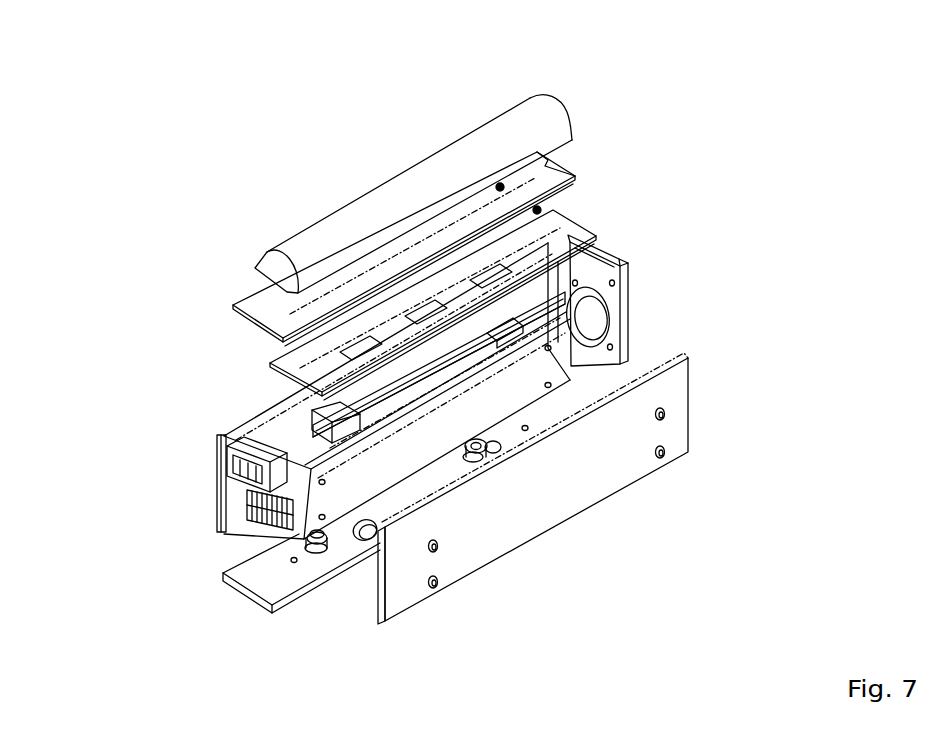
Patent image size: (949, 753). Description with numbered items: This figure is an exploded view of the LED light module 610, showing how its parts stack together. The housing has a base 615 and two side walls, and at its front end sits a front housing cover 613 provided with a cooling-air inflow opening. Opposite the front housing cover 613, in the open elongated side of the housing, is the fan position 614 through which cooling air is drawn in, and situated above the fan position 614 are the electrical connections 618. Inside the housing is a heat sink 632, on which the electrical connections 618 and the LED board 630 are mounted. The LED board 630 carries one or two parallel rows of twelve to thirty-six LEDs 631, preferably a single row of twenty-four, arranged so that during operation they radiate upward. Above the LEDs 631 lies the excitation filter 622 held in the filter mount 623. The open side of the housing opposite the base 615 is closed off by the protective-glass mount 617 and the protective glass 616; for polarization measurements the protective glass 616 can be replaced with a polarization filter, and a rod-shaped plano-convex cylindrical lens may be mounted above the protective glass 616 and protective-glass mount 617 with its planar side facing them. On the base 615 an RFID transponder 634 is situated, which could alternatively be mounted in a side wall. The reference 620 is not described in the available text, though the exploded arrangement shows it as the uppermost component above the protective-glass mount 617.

The LED light module 610 is at (300, 151).
The cover 620 is at (513, 130).
The protective-glass mount 617 is at (555, 163).
The protective glass 616 is at (505, 235).
The filter mount 623 is at (548, 243).
The front housing cover 613 is at (610, 297).
The excitation filter 622 is at (505, 347).
The LEDs 631 is at (498, 362).
The LED board 630 is at (490, 462).
The electrical connections 618 is at (222, 447).
The fan position 614 is at (247, 512).
The base 615 is at (255, 553).
The RFID transponder 634 is at (365, 540).
The heat sink 632 is at (400, 457).